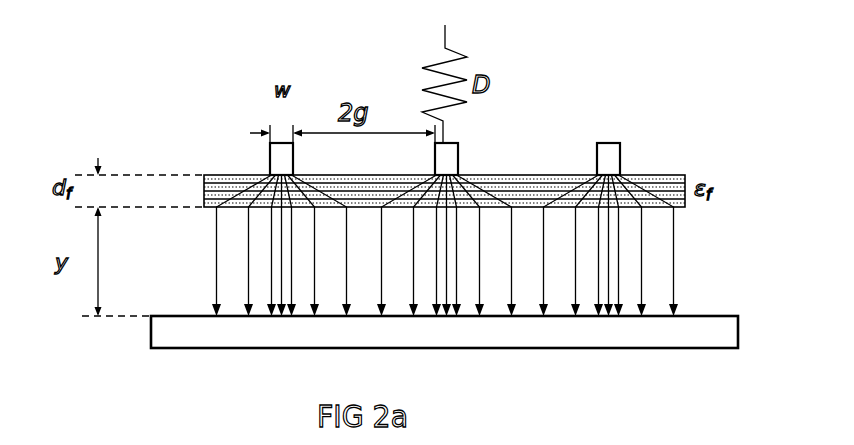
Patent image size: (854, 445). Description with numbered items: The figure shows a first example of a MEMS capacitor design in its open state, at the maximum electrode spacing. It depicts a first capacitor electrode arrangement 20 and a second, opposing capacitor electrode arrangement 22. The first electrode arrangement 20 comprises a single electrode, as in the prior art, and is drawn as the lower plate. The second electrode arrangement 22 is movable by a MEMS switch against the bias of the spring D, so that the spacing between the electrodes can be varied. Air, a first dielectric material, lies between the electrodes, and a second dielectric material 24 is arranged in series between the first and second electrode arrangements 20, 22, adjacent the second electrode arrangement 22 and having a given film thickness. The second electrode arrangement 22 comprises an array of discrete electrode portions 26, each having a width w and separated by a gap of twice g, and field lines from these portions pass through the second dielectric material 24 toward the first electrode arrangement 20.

The first capacitor electrode arrangement 20 is at (207, 348).
The second capacitor electrode arrangement 22 is at (427, 199).
The second dielectric material 24 is at (225, 176).
The discrete electrode portions 26 is at (620, 161).